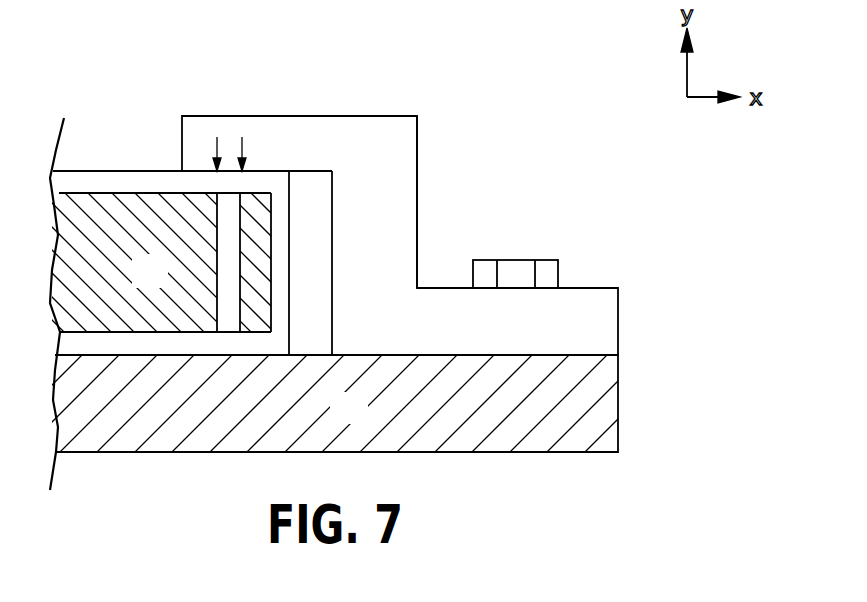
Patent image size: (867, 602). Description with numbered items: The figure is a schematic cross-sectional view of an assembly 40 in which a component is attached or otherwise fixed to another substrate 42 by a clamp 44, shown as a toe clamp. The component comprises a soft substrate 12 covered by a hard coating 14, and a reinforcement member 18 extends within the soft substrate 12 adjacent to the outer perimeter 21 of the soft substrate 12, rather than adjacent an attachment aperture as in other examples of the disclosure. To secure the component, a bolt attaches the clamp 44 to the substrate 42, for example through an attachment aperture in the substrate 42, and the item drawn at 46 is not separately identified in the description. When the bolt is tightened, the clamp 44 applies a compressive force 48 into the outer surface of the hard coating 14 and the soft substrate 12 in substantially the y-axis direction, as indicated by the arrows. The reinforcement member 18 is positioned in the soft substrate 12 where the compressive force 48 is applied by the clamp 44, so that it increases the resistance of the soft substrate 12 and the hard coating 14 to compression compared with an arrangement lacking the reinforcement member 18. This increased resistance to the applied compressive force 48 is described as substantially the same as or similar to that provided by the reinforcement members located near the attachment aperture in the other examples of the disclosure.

The soft substrate 12 is at (166, 283).
The hard coating 14 is at (163, 171).
The reinforcement member 18 is at (225, 325).
The outer perimeter 21 is at (272, 212).
The assembly 40 is at (396, 60).
The substrate 42 is at (333, 418).
The clamp 44 is at (417, 175).
The fastener 46 is at (559, 270).
The compressive force 48 is at (248, 152).